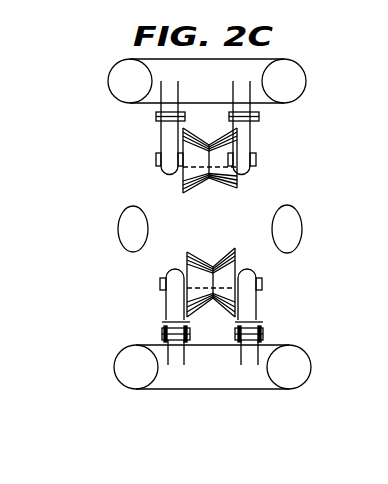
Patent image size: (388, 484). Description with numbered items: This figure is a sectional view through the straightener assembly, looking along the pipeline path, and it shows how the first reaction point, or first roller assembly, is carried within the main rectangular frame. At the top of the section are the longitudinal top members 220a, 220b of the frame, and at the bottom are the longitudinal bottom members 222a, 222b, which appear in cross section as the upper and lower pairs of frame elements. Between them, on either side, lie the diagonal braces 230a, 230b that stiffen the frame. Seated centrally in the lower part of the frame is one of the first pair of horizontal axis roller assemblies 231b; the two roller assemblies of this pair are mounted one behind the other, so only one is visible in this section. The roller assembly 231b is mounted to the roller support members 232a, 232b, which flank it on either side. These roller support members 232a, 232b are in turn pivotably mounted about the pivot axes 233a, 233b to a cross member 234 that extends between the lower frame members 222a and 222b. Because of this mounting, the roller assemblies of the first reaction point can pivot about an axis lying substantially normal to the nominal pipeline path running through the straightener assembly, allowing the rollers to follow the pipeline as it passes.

The longitudinal top member 220a is at (290, 73).
The longitudinal top member 220b is at (118, 77).
The longitudinal bottom member 222a is at (298, 367).
The longitudinal bottom member 222b is at (137, 368).
The diagonal brace 230a is at (285, 230).
The diagonal brace 230b is at (132, 229).
The horizontal axis roller assembly 231b is at (233, 252).
The roller support member 232a is at (247, 303).
The roller support member 232b is at (167, 307).
The pivot axis 233a is at (260, 332).
The pivot axis 233b is at (160, 333).
The cross member 234 is at (198, 382).